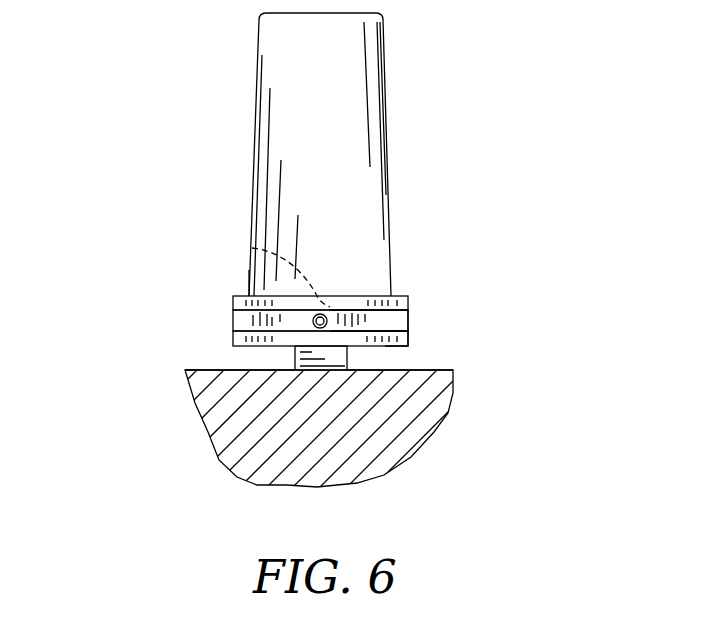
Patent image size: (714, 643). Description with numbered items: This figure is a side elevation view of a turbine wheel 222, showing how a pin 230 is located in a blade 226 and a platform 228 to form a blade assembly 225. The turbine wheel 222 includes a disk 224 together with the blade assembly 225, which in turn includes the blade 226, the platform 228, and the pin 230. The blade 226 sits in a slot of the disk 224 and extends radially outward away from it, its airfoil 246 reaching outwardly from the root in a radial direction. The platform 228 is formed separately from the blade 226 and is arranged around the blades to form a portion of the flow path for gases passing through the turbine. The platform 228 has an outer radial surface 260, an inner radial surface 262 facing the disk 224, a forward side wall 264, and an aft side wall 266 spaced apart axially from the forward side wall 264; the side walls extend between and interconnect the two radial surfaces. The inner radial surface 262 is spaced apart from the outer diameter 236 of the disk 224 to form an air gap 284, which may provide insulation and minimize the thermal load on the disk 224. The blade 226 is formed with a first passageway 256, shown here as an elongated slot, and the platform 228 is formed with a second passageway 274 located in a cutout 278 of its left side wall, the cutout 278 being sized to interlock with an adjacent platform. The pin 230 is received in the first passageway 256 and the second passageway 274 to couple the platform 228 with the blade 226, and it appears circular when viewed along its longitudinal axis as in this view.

The turbine wheel 222 is at (118, 116).
The disk 224 is at (247, 452).
The blade assembly 225 is at (436, 194).
The blade 226 is at (242, 132).
The platform 228 is at (257, 267).
The pin 230 is at (313, 321).
The outer diameter 236 is at (413, 371).
The airfoil 246 is at (348, 108).
The first passageway 256 is at (256, 264).
The outer radial surface 260 is at (372, 296).
The inner radial surface 262 is at (392, 346).
The forward side wall 264 is at (410, 338).
The aft side wall 266 is at (233, 316).
The second passageway 274 is at (328, 325).
The cutout 278 is at (410, 318).
The air gap 284 is at (200, 356).